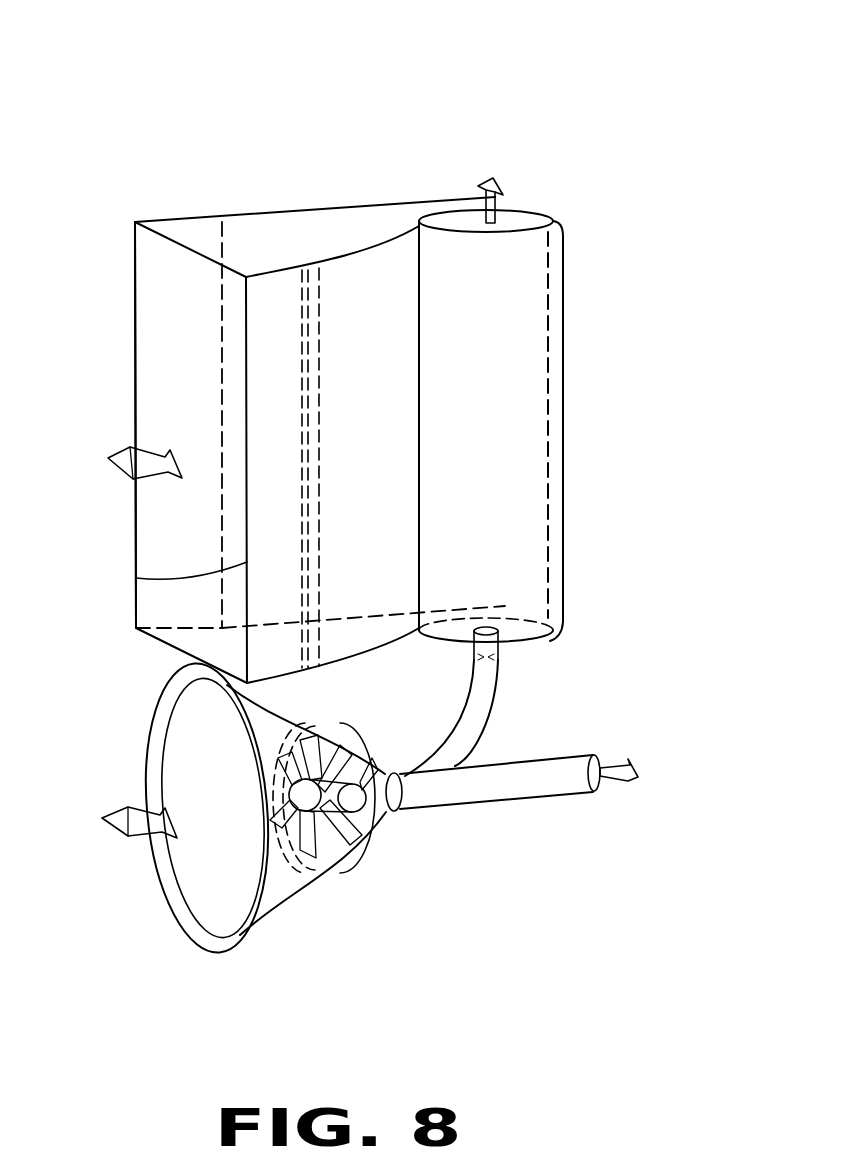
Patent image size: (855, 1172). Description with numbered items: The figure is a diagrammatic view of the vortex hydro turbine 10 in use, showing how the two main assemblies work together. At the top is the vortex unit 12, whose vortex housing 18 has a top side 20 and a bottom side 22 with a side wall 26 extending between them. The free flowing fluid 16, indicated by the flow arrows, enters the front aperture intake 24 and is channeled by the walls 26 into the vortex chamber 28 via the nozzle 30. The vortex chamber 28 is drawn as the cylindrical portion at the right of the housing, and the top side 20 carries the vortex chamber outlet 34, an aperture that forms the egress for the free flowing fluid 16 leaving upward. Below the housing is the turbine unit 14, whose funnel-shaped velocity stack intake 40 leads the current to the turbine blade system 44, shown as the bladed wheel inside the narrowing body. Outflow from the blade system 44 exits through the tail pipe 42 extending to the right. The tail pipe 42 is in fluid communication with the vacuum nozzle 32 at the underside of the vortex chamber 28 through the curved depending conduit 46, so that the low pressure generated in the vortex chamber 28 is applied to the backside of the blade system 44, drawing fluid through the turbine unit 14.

The vortex hydro turbine 10 is at (656, 122).
The vortex unit 12 is at (238, 217).
The turbine unit 14 is at (148, 733).
The free flowing fluid 16 is at (497, 187).
The vortex housing 18 is at (270, 213).
The top side of vortex housing 20 is at (352, 227).
The bottom side of vortex housing 22 is at (340, 662).
The intake of vortex housing 24 is at (177, 292).
The wall of vortex housing 26 is at (167, 545).
The vortex chamber 28 is at (512, 426).
The nozzle of vortex chamber 30 is at (555, 530).
The vacuum nozzle 32 is at (488, 628).
The vortex chamber outlet 34 is at (455, 212).
The velocity stack/intake of turbine unit 40 is at (210, 878).
The tail pipe/output of turbine unit 42 is at (600, 775).
The turbine blade system 44 is at (370, 833).
The depending conduit 46 is at (478, 692).